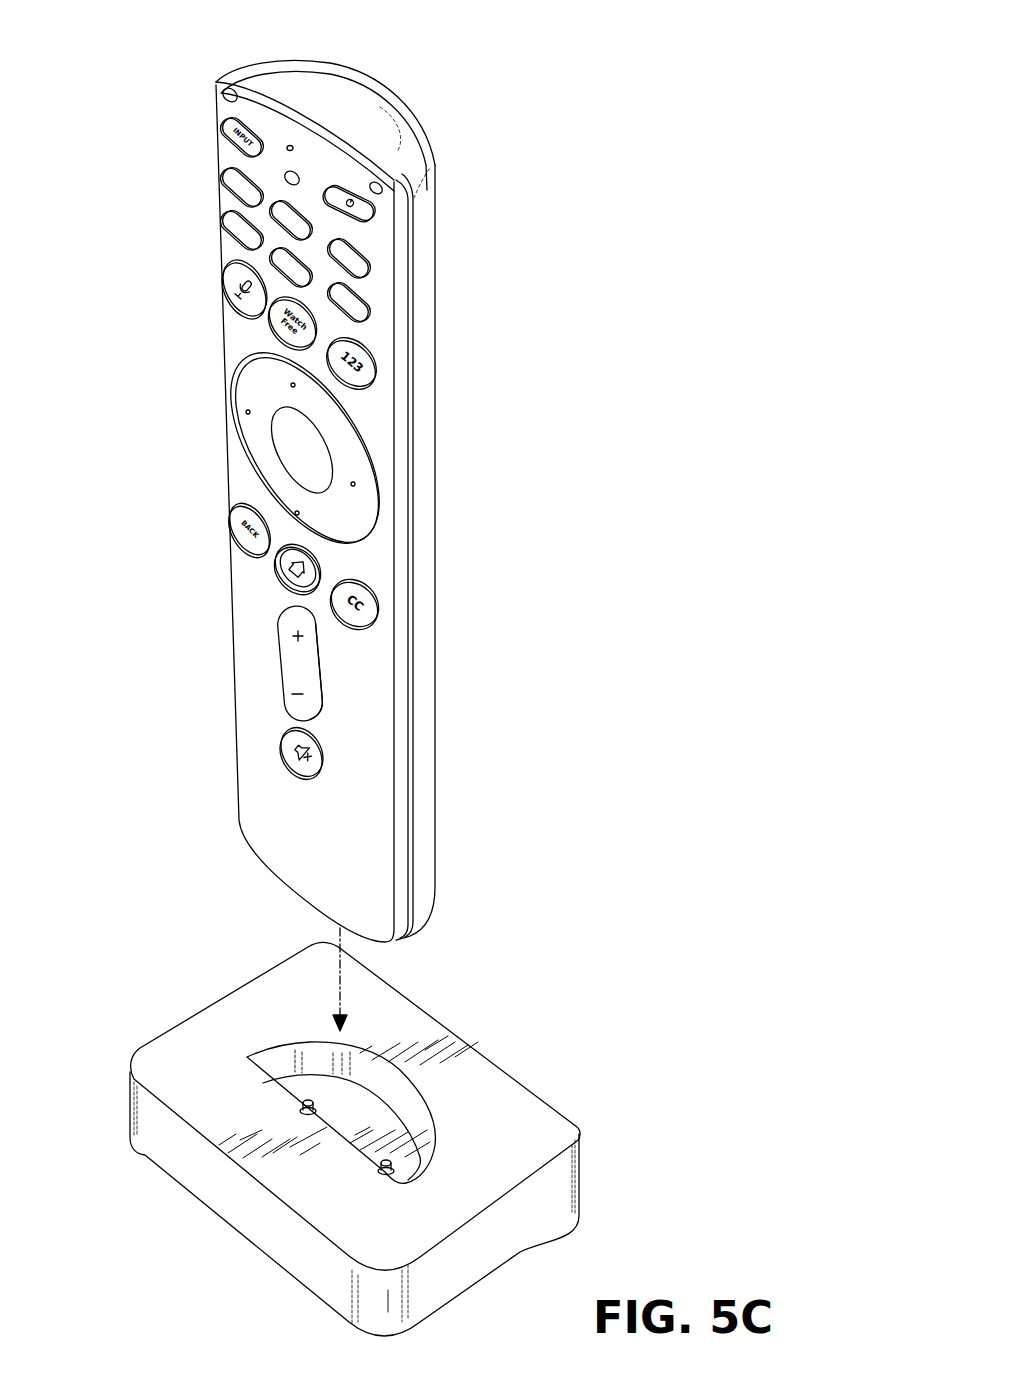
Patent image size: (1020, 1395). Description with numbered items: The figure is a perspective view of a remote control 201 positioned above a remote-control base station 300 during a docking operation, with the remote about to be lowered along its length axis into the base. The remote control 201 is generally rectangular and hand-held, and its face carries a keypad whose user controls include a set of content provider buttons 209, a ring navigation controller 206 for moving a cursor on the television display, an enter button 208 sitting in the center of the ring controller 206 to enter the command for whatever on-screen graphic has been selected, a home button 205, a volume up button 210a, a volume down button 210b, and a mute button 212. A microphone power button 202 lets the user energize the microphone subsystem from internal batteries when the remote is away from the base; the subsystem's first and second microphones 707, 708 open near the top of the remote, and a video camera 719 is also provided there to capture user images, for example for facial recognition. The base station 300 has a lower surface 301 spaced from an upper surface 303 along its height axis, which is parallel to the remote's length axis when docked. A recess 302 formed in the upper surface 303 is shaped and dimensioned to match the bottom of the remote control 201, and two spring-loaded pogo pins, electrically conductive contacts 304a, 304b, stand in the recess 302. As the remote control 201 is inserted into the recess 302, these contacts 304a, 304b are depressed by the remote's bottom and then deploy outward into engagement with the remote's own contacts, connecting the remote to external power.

The remote control 201 is at (430, 300).
The microphone power button 202 is at (228, 277).
The home button 205 is at (285, 582).
The ring navigation controller 206 is at (352, 518).
The OK button 208 is at (278, 428).
The content provider buttons 209 is at (226, 176).
The volume up button 210a is at (293, 635).
The volume down button 210b is at (297, 694).
The mute button 212 is at (323, 767).
The first microphone 707 is at (225, 86).
The second microphone 708 is at (382, 184).
The video camera 719 is at (296, 172).
The remote-control base station 300 is at (386, 1138).
The lower surface 301 is at (555, 1233).
The recess 302 is at (373, 1088).
The upper surface 303 is at (565, 1130).
The electrically conductive contact 304a is at (304, 1100).
The electrically conductive contact 304b is at (380, 1170).